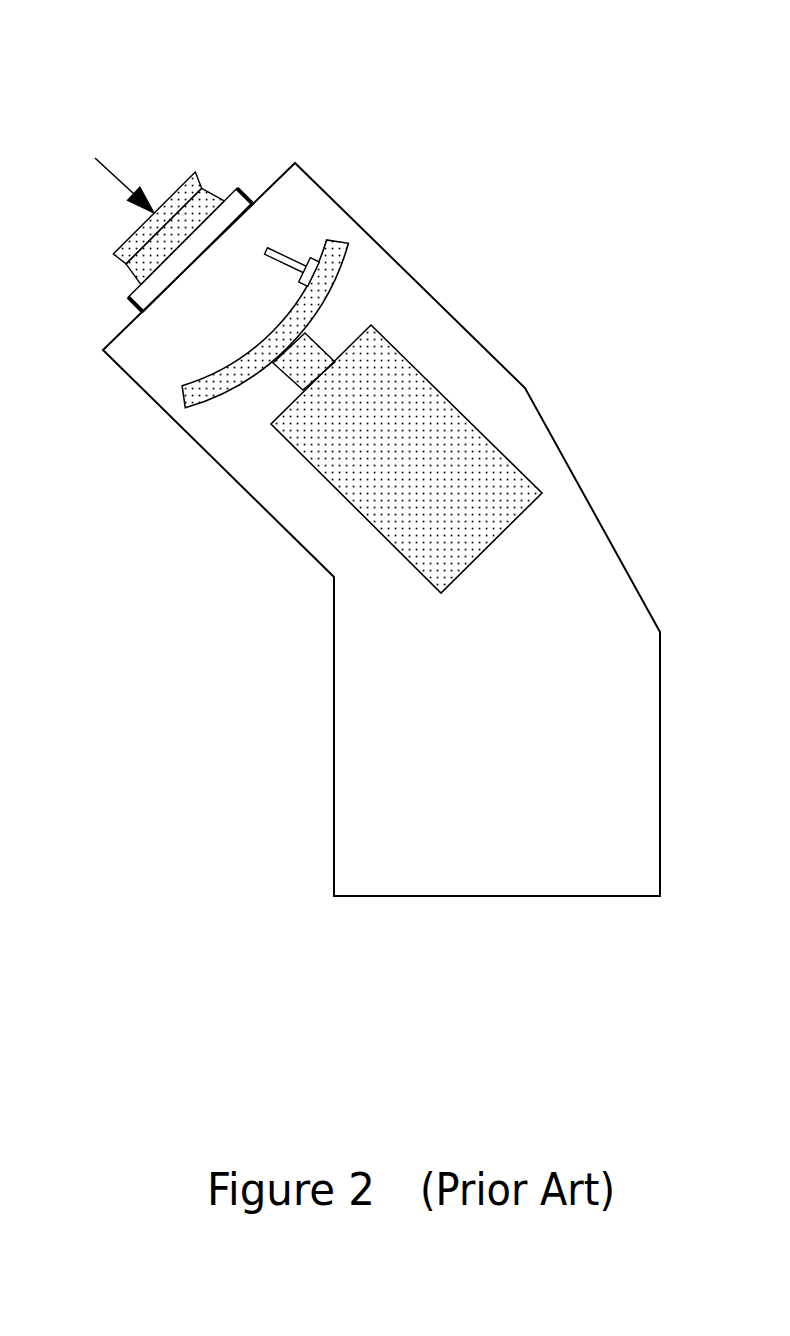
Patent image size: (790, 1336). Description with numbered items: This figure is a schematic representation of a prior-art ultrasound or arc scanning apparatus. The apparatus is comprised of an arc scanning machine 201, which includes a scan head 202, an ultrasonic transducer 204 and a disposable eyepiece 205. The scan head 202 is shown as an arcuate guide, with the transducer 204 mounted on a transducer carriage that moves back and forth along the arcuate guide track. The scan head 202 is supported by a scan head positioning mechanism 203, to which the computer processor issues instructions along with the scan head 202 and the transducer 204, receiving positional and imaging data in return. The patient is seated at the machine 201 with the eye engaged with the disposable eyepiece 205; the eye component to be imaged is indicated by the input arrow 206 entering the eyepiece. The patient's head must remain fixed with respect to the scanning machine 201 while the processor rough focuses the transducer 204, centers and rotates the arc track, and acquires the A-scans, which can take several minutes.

The arc scanning machine 201 is at (263, 522).
The scan head 202 is at (347, 270).
The scan head positioning mechanism 203 is at (423, 372).
The ultrasonic transducer 204 is at (276, 267).
The disposable eyepiece 205 is at (198, 168).
The incident light 206 is at (103, 147).